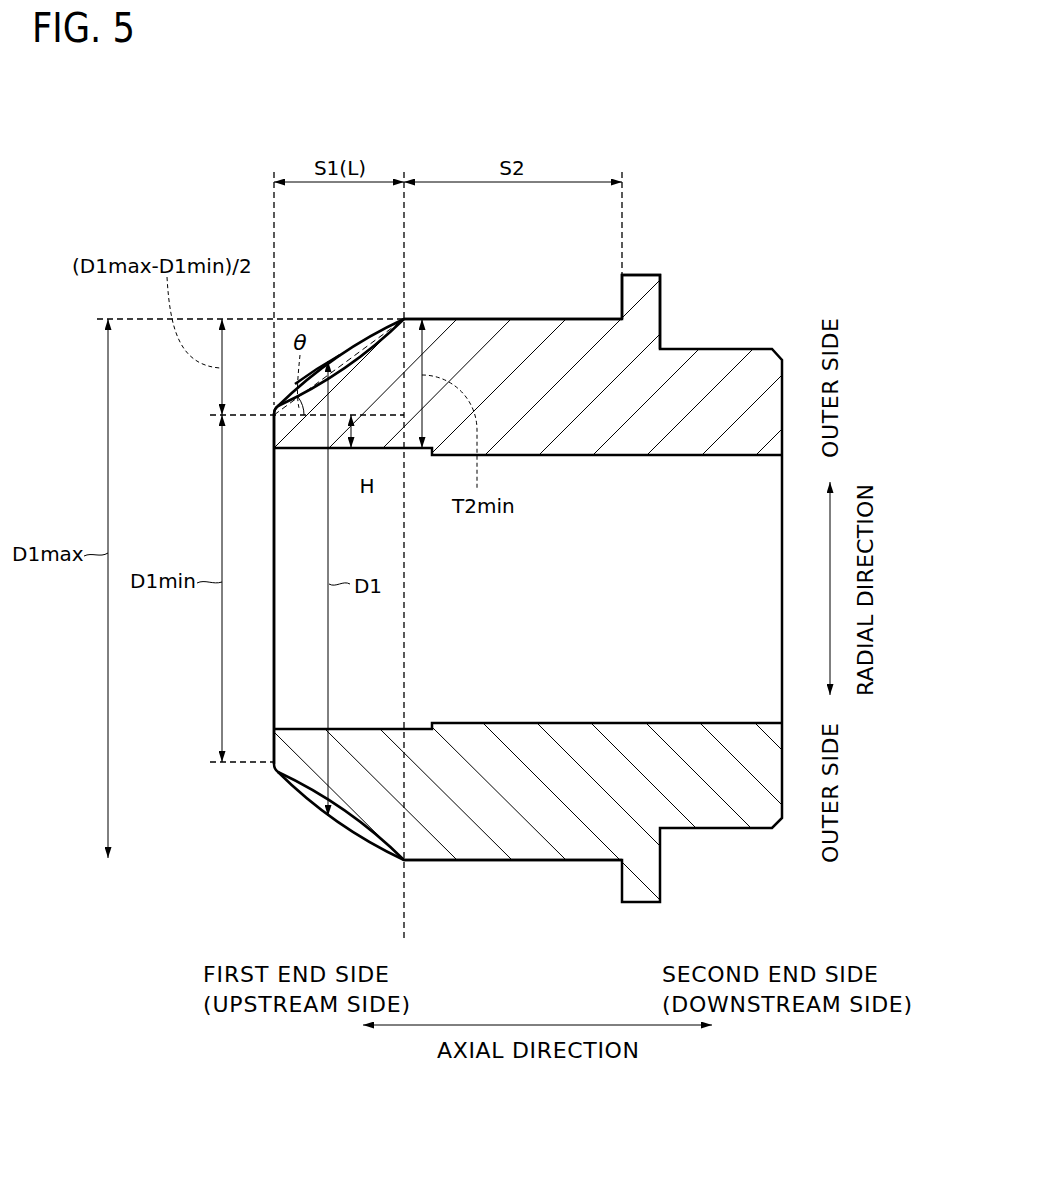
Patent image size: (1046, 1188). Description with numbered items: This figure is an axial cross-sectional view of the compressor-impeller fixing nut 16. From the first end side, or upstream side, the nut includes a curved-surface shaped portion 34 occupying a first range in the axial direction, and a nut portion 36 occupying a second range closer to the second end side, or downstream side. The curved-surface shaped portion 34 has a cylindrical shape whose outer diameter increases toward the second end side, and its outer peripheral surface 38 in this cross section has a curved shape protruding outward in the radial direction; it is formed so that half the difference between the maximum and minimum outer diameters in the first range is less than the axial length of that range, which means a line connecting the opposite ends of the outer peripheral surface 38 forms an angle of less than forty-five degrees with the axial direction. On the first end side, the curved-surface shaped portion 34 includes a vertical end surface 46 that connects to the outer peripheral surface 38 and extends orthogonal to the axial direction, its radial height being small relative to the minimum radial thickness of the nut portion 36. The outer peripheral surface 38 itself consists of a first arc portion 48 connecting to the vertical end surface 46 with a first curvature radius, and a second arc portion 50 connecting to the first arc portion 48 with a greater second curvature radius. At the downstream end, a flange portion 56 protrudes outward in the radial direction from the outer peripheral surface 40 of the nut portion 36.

The compressor-impeller fixing nut 16 is at (795, 173).
The curved-surface shaped portion 34 is at (368, 810).
The nut portion 36 is at (530, 843).
The outer peripheral surface 38 is at (355, 340).
The outer peripheral surface 40 is at (485, 319).
The vertical end surface 46 is at (274, 434).
The first arc portion 48 is at (273, 400).
The second arc portion 50 is at (316, 367).
The flange portion 56 is at (645, 275).